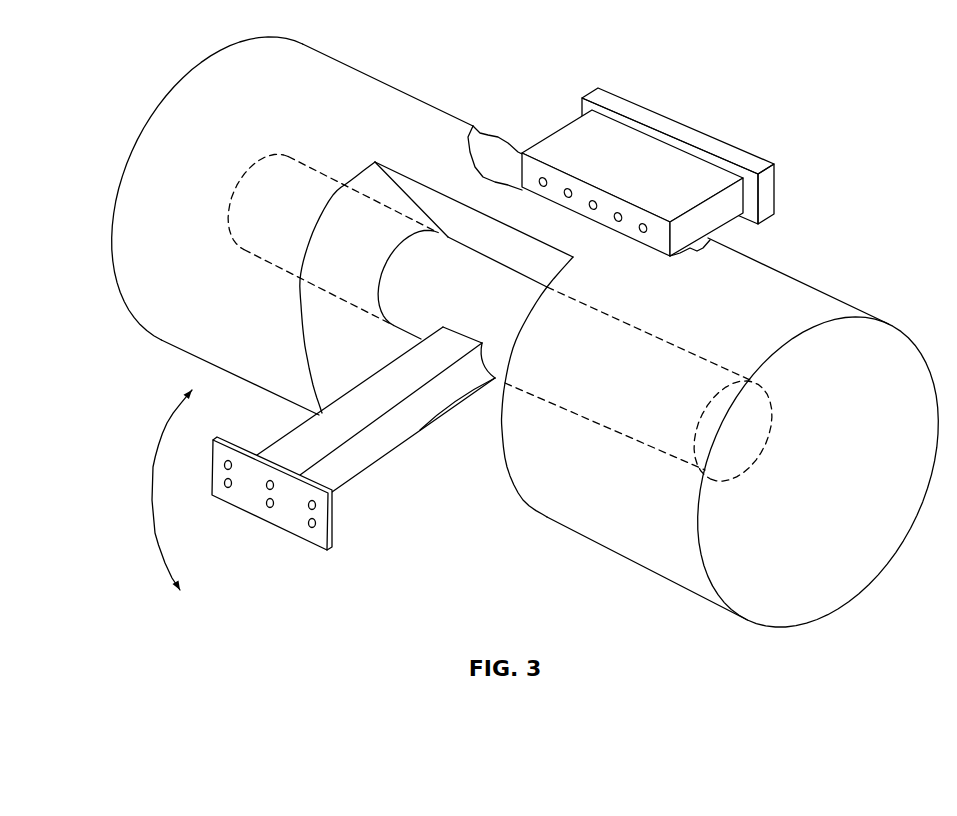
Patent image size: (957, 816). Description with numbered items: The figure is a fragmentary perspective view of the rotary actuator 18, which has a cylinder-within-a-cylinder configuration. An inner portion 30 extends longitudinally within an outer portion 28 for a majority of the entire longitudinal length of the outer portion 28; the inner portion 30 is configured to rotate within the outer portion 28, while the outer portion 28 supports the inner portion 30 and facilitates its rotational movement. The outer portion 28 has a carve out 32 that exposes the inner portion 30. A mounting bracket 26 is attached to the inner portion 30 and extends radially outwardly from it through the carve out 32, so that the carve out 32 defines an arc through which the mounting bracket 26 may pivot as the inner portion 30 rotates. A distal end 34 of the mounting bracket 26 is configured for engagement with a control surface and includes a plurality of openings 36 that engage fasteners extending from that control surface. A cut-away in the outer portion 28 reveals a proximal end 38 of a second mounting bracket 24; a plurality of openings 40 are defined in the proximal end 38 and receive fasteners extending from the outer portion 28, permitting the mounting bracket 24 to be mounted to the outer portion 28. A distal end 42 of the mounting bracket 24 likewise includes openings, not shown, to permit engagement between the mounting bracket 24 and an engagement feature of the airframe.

The rotary actuator 18 is at (100, 78).
The mounting bracket 24 is at (649, 196).
The mounting bracket 26 is at (380, 447).
The outer portion 28 is at (797, 291).
The inner portion 30 is at (641, 440).
The carve out 32 is at (457, 257).
The distal end 34 is at (335, 539).
The openings 36 is at (224, 465).
The proximal end 38 is at (713, 223).
The openings 40 is at (543, 186).
The distal end 42 is at (600, 100).